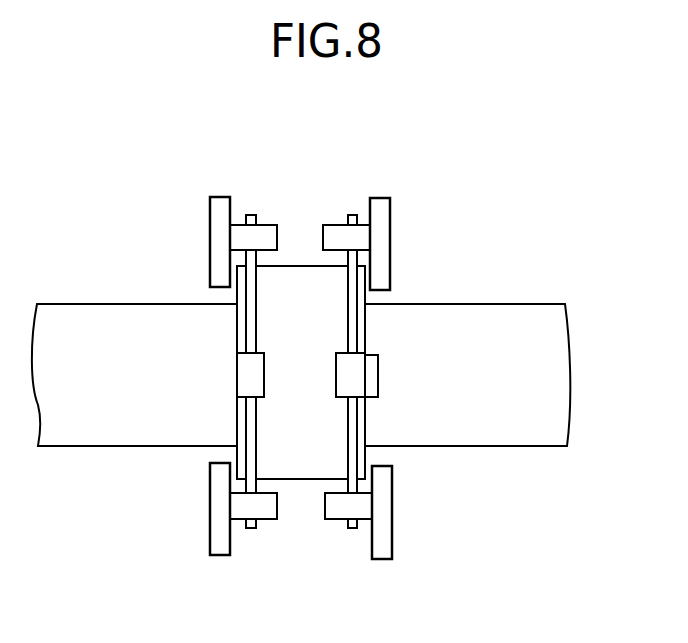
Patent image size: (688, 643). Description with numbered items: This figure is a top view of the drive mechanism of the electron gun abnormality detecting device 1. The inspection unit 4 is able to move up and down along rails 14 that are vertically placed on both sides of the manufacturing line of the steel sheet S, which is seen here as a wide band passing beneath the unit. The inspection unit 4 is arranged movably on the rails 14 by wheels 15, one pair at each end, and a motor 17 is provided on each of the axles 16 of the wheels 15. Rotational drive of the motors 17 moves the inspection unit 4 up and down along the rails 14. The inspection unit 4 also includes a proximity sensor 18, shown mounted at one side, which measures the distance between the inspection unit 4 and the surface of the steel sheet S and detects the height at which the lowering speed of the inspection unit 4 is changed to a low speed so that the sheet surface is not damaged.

The electron gun abnormality detecting device 1 is at (202, 158).
The inspection unit 4 is at (296, 265).
The rails 14 is at (210, 228).
The wheels 15 is at (262, 225).
The axles 16 is at (249, 316).
The motor 17 is at (237, 378).
The proximity sensor 18 is at (378, 385).
The steel sheet S is at (525, 446).